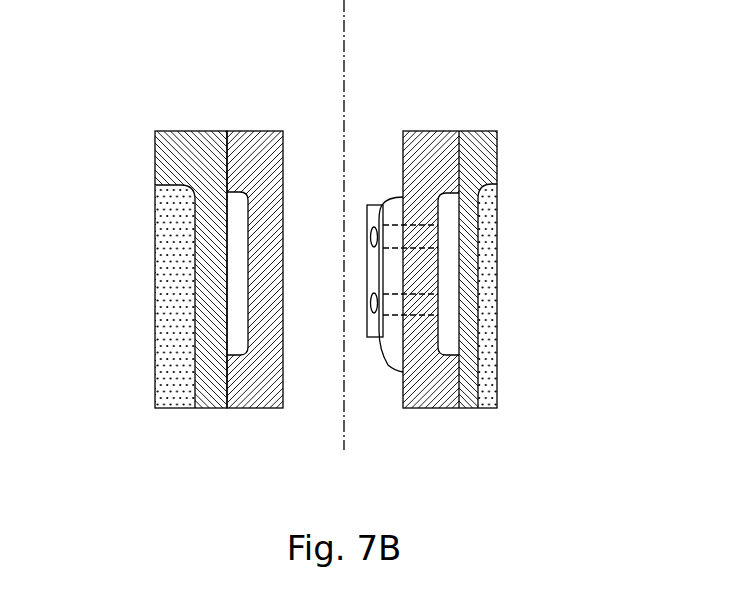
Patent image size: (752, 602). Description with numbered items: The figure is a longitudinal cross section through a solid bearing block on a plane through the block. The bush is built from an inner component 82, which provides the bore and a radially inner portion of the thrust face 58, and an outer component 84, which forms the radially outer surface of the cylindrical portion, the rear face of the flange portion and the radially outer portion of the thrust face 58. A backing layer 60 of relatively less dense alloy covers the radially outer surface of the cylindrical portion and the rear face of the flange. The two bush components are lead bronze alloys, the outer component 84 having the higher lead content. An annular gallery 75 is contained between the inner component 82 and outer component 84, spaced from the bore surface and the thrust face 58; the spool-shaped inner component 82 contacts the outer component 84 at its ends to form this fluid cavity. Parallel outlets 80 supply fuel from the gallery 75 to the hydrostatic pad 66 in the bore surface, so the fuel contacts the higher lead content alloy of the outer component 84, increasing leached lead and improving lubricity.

The thrust face 58 is at (162, 219).
The backing layer 60 is at (172, 240).
The hydrostatic pad 66 is at (375, 205).
The annular gallery 75 is at (450, 268).
The parallel outlets 80 is at (403, 197).
The inner component 82 is at (260, 373).
The outer component 84 is at (207, 292).